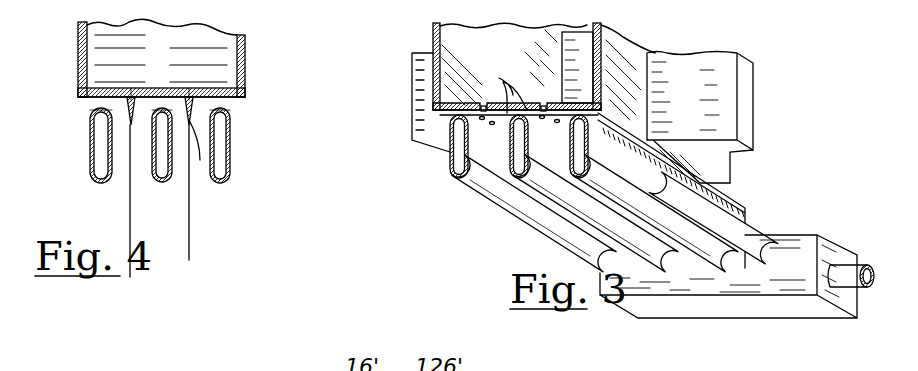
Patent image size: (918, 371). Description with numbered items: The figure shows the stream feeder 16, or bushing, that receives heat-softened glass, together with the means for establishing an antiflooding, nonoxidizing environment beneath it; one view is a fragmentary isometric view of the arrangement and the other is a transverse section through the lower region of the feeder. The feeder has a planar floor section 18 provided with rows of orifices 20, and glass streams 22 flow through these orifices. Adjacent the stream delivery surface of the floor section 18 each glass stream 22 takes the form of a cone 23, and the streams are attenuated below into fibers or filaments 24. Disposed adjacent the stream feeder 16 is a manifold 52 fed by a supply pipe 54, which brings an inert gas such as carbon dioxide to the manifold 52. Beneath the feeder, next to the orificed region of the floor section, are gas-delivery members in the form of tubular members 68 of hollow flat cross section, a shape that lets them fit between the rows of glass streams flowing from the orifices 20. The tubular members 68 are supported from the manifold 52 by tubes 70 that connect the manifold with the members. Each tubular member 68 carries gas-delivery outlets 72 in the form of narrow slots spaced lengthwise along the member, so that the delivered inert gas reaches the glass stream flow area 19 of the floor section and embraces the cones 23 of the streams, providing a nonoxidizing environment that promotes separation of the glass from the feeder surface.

In FIG. 4, the stream feeder 16 is at (77, 32).
In FIG. 3, the stream feeder 16 is at (430, 40).
In FIG. 4, the floor section 18 is at (217, 92).
In FIG. 3, the floor section 18 is at (463, 100).
In FIG. 4, the glass stream flow area 19 is at (217, 100).
In FIG. 3, the glass stream flow area 19 is at (470, 112).
In FIG. 4, the orifices 20 is at (130, 88).
In FIG. 3, the orifices 20 is at (516, 97).
In FIG. 4, the glass streams 22 is at (189, 120).
In FIG. 4, the cone 23 is at (127, 100).
In FIG. 4, the filaments 24 is at (190, 247).
In FIG. 3, the manifold 52 is at (783, 302).
In FIG. 3, the supply pipe 54 is at (864, 263).
In FIG. 4, the tubular members 68 is at (100, 180).
In FIG. 3, the tubular members 68 is at (450, 162).
In FIG. 3, the tubes 70 is at (775, 250).
In FIG. 4, the gas-delivery outlets 72 is at (160, 113).
In FIG. 3, the gas-delivery outlets 72 is at (460, 182).